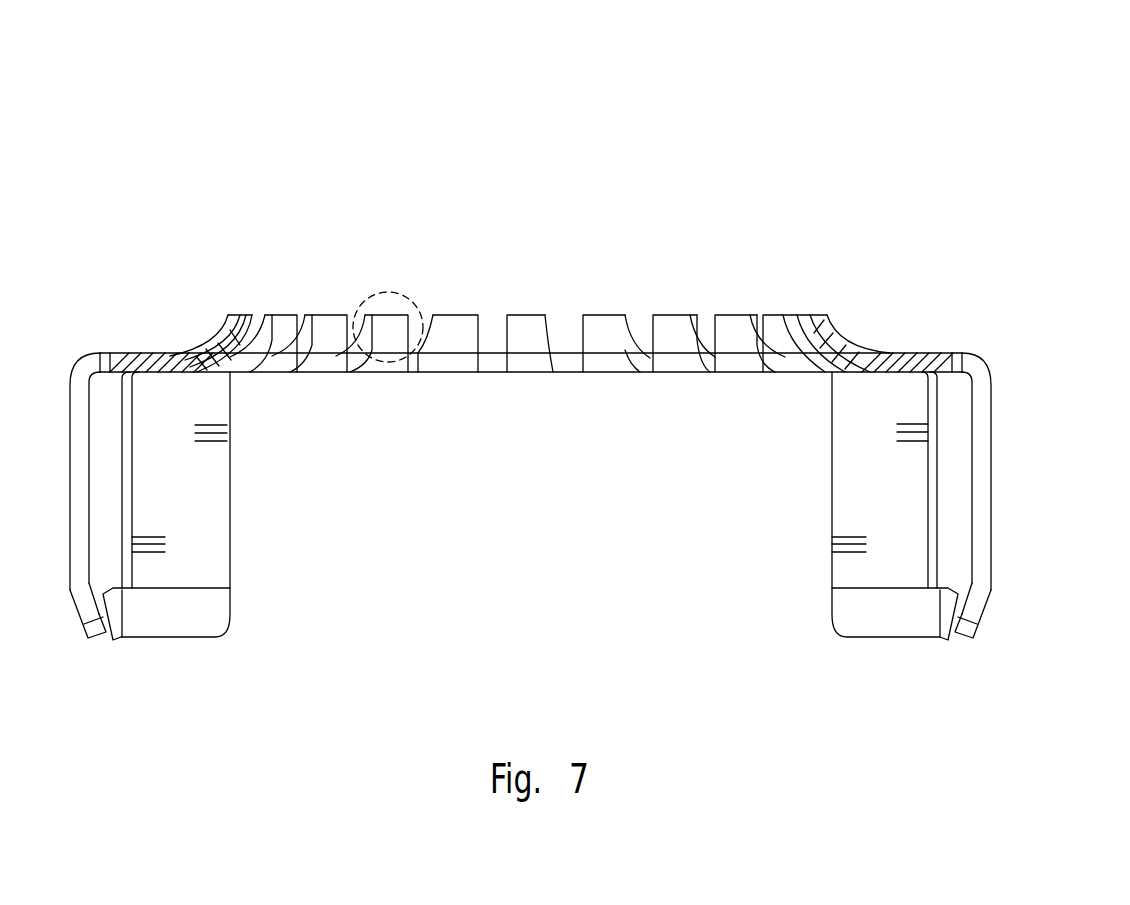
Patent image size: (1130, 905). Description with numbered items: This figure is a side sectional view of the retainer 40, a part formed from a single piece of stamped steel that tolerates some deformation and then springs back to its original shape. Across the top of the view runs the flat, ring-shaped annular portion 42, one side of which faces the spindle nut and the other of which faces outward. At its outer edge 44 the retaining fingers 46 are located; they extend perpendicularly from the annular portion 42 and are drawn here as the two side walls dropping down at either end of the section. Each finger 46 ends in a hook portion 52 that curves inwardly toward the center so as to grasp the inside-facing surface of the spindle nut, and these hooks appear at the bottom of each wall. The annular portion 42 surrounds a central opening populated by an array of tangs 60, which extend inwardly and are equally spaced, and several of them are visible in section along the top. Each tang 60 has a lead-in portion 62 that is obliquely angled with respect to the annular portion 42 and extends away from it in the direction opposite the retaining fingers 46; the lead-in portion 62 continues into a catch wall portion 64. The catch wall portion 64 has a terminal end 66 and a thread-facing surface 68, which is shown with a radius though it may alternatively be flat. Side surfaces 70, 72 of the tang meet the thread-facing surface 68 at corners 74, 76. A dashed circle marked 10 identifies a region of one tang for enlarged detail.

The detail region 10 is at (393, 292).
The retainer 40 is at (595, 362).
The annular portion 42 is at (912, 350).
The outer edge 44 is at (960, 355).
The retaining fingers 46 is at (252, 503).
The hook portion 52 is at (242, 621).
The tangs 60 is at (546, 323).
The lead-in portion 62 is at (853, 357).
The catch wall portion 64 is at (826, 336).
The terminal end 66 is at (662, 335).
The thread-facing surface 68 is at (592, 335).
The side surface 70 is at (289, 360).
The side surface 72 is at (715, 332).
The corner 74 is at (378, 340).
The corner 76 is at (683, 340).